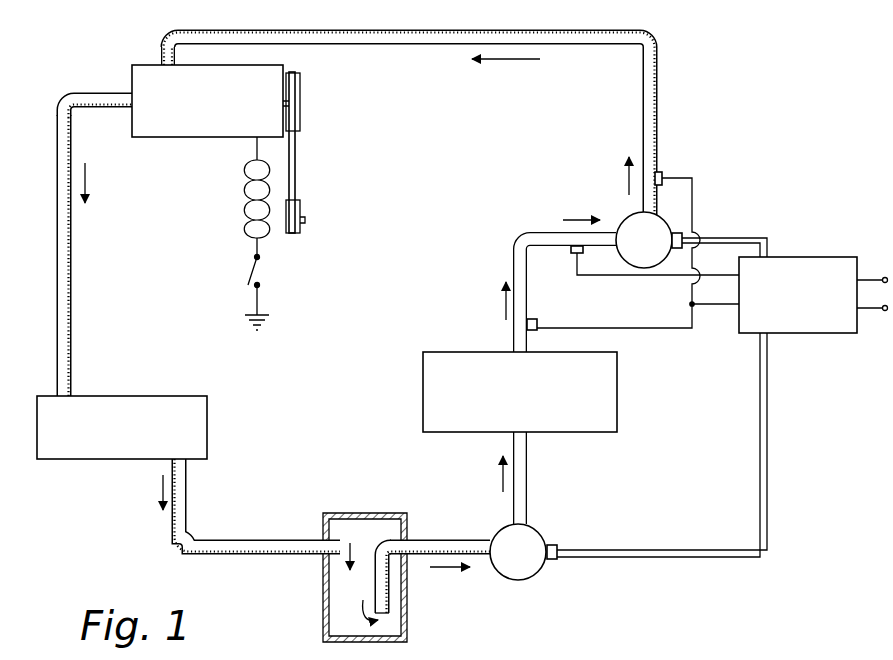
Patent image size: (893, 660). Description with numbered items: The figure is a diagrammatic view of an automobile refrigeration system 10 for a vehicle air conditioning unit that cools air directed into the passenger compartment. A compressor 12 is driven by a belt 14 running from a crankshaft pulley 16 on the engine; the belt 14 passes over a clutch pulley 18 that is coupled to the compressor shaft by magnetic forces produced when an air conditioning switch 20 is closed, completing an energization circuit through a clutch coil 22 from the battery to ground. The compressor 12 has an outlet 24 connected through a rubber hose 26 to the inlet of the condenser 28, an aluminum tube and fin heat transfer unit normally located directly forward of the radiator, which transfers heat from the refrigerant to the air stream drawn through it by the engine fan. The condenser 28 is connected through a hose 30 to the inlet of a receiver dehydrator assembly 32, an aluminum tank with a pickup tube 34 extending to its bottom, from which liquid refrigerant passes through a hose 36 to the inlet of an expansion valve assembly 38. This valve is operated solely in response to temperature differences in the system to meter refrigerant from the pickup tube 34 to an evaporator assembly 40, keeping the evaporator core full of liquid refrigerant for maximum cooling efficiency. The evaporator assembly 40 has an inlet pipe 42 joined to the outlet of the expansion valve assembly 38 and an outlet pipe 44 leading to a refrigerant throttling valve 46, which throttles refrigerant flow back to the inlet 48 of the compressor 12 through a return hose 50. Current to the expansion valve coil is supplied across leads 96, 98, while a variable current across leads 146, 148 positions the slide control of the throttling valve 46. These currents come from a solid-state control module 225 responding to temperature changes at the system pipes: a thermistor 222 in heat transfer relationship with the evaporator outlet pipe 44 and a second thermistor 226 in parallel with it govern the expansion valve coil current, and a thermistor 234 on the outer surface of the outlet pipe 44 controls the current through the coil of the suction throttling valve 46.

The automobile refrigeration system 10 is at (322, 108).
The compressor 12 is at (207, 127).
The belt 14 is at (296, 153).
The crankshaft pulley 16 is at (297, 212).
The clutch pulley 18 is at (297, 98).
The air conditioning switch 20 is at (250, 272).
The clutch coil 22 is at (246, 182).
The outlet 24 is at (122, 100).
The rubber hose 26 is at (65, 310).
The condenser 28 is at (109, 406).
The hose 30 is at (218, 542).
The receiver dehydrator assembly 32 is at (323, 578).
The pickup tube 34 is at (383, 603).
The hose 36 is at (426, 545).
The expansion valve assembly 38 is at (524, 572).
The evaporator assembly 40 is at (452, 360).
The inlet pipe 42 is at (518, 477).
The outlet pipe 44 is at (519, 265).
The refrigerant throttling valve 46 is at (622, 216).
The inlet 48 is at (163, 50).
The return hose 50 is at (550, 45).
The lead 96 is at (613, 550).
The lead 98 is at (627, 558).
The lead 146 is at (722, 238).
The lead 148 is at (743, 243).
The thermistor 222 is at (540, 322).
The control module 225 is at (803, 324).
The second thermistor 226 is at (661, 175).
The thermistor 234 is at (575, 256).